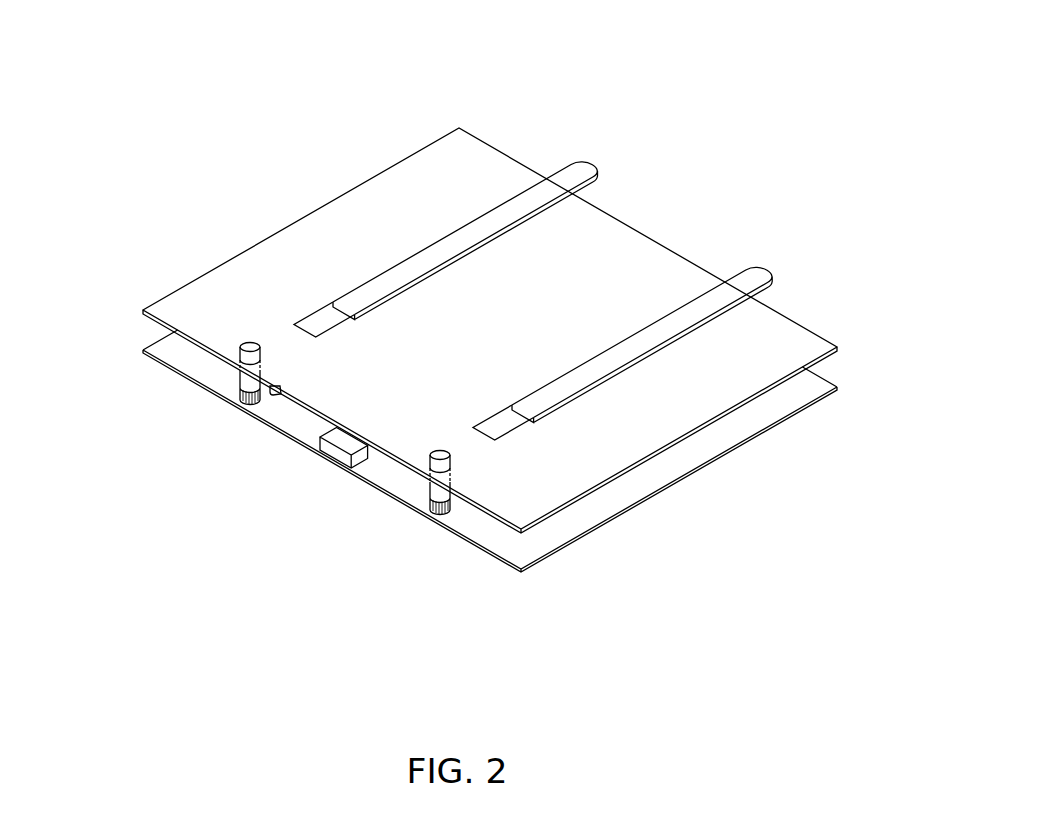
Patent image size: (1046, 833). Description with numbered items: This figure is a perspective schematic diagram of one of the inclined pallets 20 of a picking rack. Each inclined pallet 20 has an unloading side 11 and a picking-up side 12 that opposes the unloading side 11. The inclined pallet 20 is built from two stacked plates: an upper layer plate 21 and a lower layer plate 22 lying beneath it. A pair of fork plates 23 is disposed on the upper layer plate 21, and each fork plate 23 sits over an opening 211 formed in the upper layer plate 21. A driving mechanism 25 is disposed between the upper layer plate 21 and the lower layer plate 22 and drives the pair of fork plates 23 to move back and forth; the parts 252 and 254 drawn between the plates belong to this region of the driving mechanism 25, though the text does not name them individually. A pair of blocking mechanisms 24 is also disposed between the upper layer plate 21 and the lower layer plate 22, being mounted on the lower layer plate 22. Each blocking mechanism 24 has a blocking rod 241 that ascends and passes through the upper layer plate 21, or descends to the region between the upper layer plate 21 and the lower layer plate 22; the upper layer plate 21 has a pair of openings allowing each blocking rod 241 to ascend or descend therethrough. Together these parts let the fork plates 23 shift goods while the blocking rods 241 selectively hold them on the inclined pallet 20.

The inclined pallet 20 is at (303, 32).
The unloading side 11 is at (462, 471).
The picking-up side 12 is at (499, 330).
The upper layer plate 21 is at (190, 303).
The opening 211 is at (322, 322).
The lower layer plate 22 is at (175, 355).
The fork plate 23 is at (575, 175).
The blocking mechanism 24 is at (418, 503).
The blocking rod 241 is at (449, 459).
The driving mechanism 25 is at (300, 469).
The connector part 252 is at (277, 396).
The connector body 254 is at (325, 475).